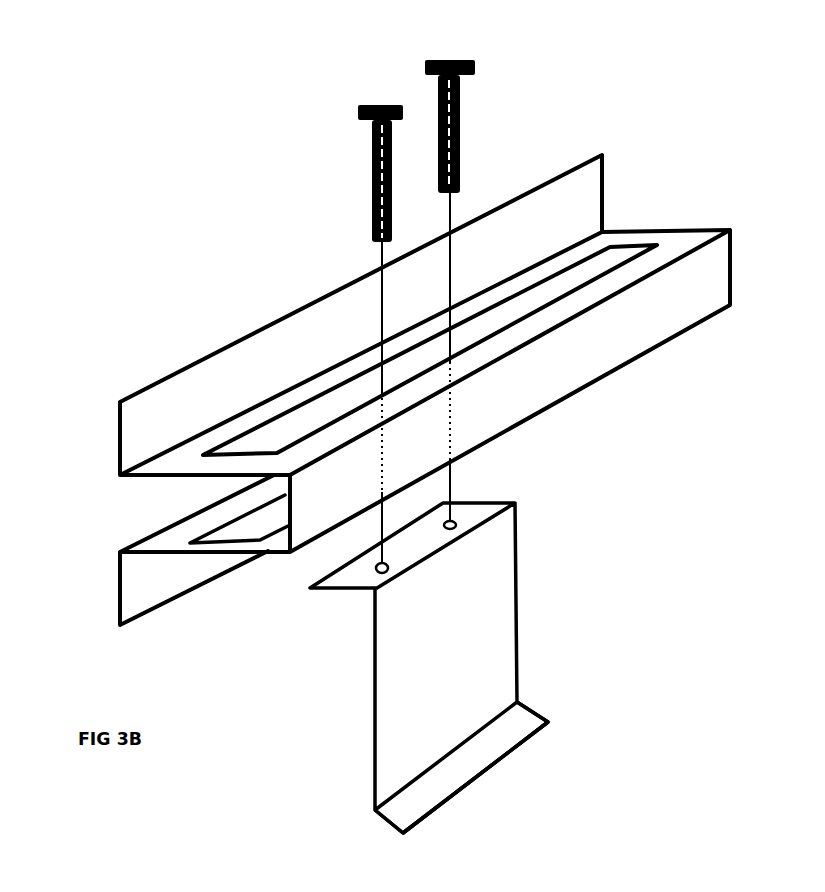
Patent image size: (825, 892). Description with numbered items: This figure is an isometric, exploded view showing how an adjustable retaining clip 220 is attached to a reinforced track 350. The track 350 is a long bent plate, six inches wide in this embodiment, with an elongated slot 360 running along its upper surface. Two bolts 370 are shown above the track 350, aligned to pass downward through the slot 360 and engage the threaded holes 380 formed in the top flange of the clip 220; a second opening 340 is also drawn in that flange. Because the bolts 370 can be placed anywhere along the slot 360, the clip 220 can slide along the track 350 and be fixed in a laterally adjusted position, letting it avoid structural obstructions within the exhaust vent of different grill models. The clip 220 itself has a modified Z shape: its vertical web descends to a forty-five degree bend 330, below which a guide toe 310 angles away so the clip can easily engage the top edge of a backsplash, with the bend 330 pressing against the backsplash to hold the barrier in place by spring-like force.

The bolts 370 is at (458, 115).
The slot 360 is at (613, 253).
The track 350 is at (705, 272).
The threaded holes 380 is at (478, 505).
The second hole 340 is at (482, 532).
The retaining clip 220 is at (482, 608).
The 45 degree bend 330 is at (518, 710).
The guide toe 310 is at (513, 735).